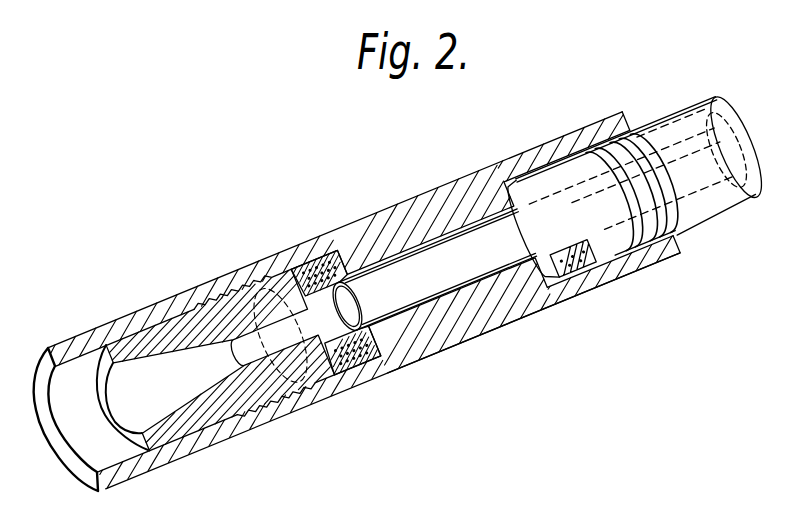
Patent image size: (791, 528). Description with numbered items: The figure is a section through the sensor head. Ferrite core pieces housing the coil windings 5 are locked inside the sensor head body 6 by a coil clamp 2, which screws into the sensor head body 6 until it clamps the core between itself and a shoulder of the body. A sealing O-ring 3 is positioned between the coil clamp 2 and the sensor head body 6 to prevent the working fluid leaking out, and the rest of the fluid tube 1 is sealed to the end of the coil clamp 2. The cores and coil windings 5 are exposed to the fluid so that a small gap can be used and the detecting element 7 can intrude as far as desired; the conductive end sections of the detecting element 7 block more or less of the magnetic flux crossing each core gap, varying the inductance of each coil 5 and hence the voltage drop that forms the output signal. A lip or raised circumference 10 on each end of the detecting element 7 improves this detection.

The fluid tube 1 is at (130, 314).
The coil clamp 2 is at (213, 305).
The sealing O-ring 3 is at (618, 262).
The coil windings 5 is at (304, 264).
The sensor head body 6 is at (513, 313).
The detecting element 7 is at (362, 282).
The lip or raised circumference 10 is at (312, 352).